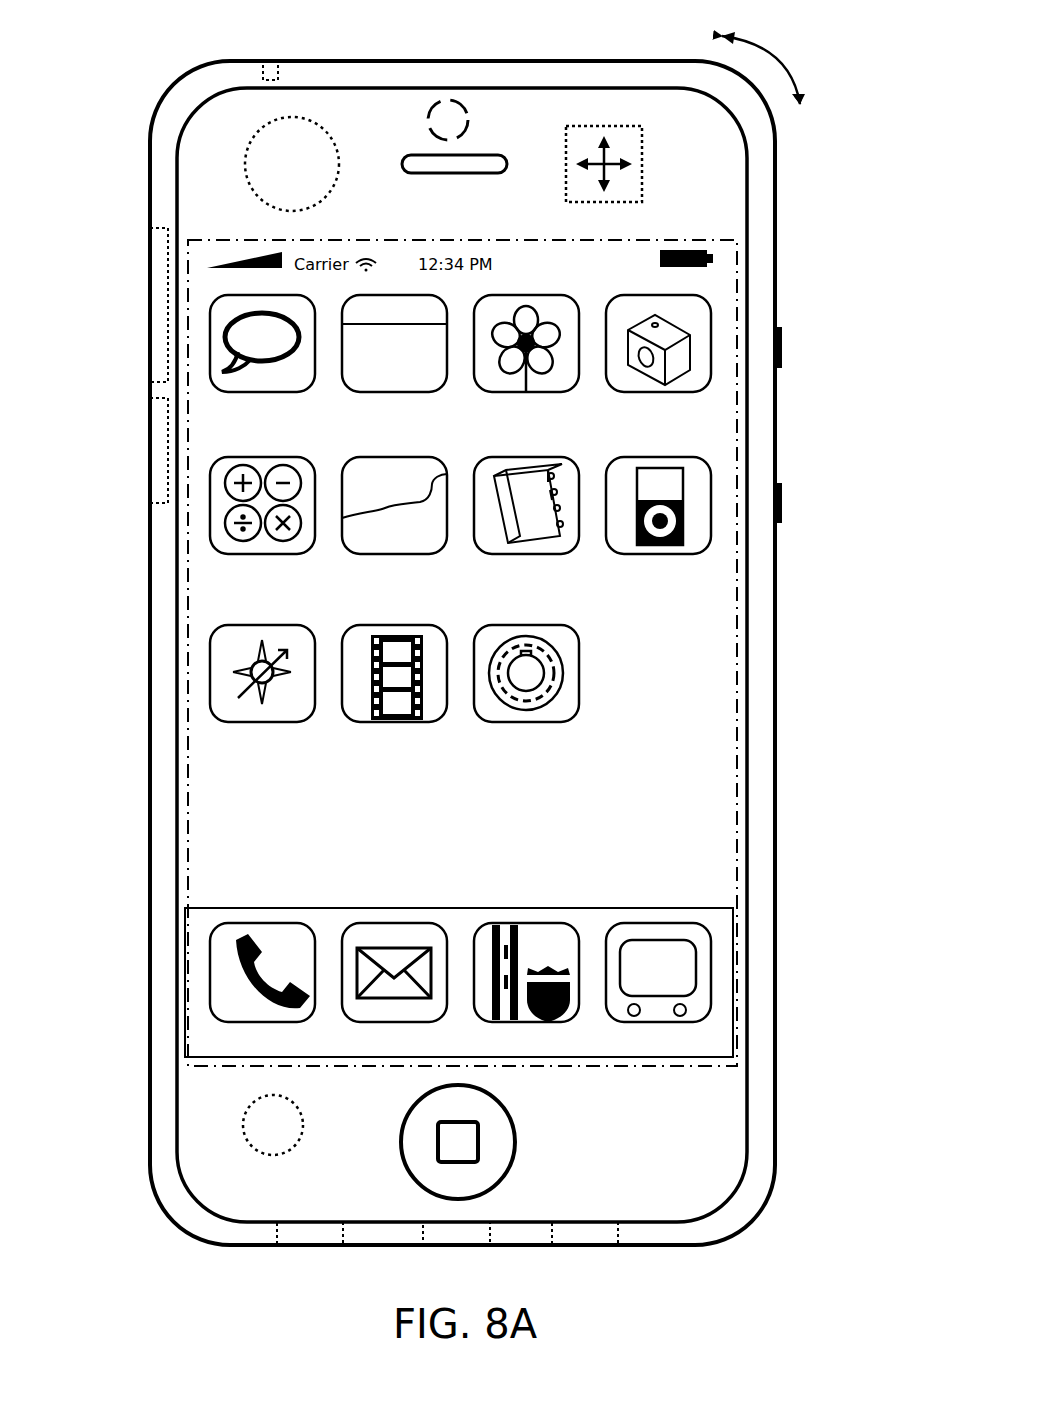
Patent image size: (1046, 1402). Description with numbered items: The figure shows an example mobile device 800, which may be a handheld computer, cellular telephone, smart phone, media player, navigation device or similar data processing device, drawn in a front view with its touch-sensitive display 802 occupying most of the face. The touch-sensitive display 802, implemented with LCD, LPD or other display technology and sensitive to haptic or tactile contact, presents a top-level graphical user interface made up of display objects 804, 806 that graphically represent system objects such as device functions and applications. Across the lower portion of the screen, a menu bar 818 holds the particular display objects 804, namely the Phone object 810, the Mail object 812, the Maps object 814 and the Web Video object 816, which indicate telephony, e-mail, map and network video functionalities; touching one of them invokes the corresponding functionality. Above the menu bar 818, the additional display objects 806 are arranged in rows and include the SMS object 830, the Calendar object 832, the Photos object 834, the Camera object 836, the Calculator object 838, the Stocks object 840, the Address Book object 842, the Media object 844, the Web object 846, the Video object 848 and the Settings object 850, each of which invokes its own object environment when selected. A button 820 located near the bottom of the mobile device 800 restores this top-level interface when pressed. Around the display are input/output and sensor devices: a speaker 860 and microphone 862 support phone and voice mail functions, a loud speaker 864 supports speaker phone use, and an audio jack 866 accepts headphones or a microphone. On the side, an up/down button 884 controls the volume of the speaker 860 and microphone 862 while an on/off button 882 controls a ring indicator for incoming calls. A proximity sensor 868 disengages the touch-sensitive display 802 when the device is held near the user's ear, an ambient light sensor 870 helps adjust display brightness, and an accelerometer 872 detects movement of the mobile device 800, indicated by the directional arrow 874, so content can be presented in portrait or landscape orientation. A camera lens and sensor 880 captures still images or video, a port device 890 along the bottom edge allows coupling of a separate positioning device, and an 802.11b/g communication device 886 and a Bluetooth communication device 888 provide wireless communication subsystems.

The mobile device 800 is at (552, 60).
The touch-sensitive display 802 is at (668, 240).
The display objects 804 is at (718, 928).
The display objects 806 is at (718, 293).
The Phone object 810 is at (262, 923).
The Mail object 812 is at (395, 923).
The Maps object 814 is at (542, 923).
The Web Video object 816 is at (658, 923).
The menu bar 818 is at (607, 1058).
The button 820 is at (515, 1140).
The SMS object 830 is at (315, 392).
The Calendar object 832 is at (447, 392).
The Photos object 834 is at (577, 392).
The Camera object 836 is at (711, 393).
The Calculator object 838 is at (315, 554).
The Stocks object 840 is at (447, 554).
The Address Book object 842 is at (577, 554).
The Media object 844 is at (711, 550).
The Web object 846 is at (315, 722).
The Video object 848 is at (447, 722).
The Settings object 850 is at (578, 722).
The speaker 860 is at (422, 173).
The microphone 862 is at (345, 1240).
The loud speaker 864 is at (618, 1240).
The audio jack 866 is at (278, 70).
The proximity sensor 868 is at (336, 176).
The ambient light sensor 870 is at (292, 1150).
The accelerometer 872 is at (642, 166).
The directional arrow 874 is at (783, 63).
The camera lens and sensor 880 is at (470, 120).
The on/off button 882 is at (783, 348).
The up/down button 884 is at (783, 503).
The 802.11b/g communication device 886 is at (156, 230).
The Bluetooth communication device 888 is at (156, 398).
The port device 890 is at (490, 1240).